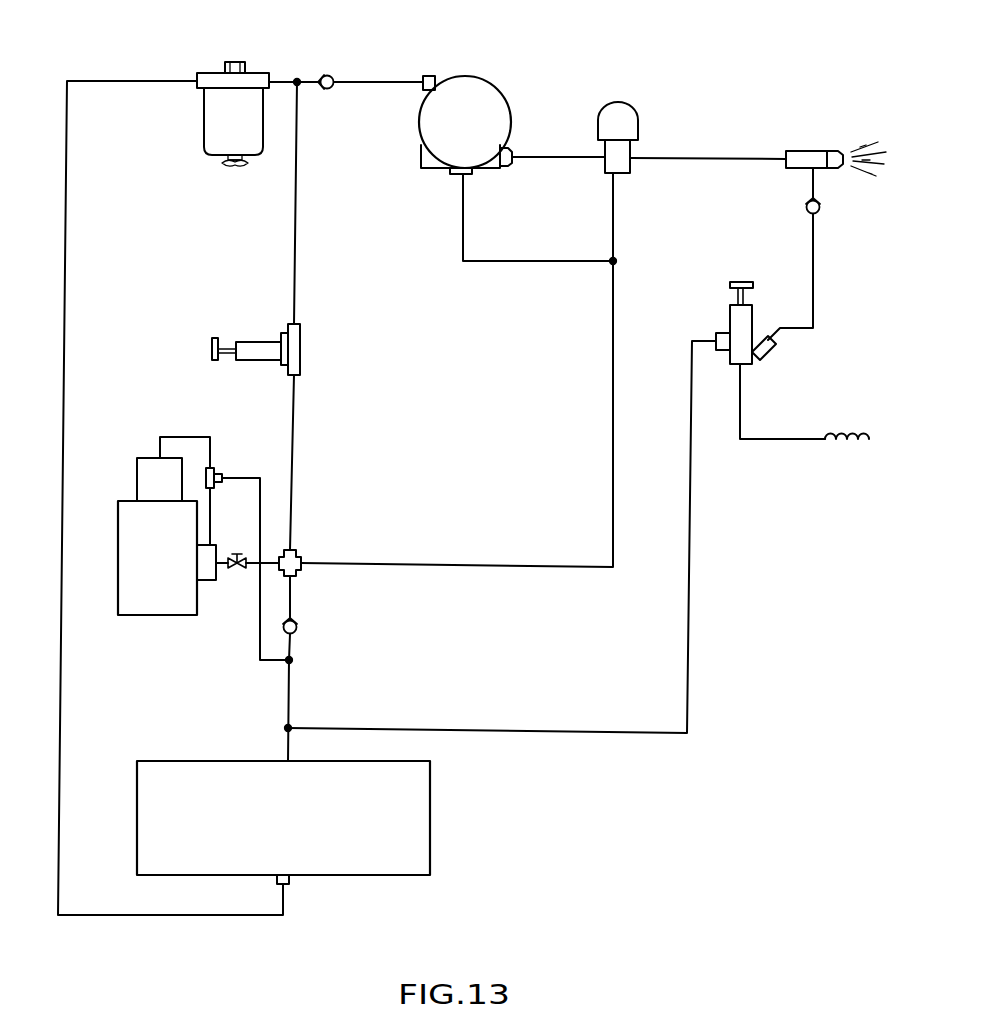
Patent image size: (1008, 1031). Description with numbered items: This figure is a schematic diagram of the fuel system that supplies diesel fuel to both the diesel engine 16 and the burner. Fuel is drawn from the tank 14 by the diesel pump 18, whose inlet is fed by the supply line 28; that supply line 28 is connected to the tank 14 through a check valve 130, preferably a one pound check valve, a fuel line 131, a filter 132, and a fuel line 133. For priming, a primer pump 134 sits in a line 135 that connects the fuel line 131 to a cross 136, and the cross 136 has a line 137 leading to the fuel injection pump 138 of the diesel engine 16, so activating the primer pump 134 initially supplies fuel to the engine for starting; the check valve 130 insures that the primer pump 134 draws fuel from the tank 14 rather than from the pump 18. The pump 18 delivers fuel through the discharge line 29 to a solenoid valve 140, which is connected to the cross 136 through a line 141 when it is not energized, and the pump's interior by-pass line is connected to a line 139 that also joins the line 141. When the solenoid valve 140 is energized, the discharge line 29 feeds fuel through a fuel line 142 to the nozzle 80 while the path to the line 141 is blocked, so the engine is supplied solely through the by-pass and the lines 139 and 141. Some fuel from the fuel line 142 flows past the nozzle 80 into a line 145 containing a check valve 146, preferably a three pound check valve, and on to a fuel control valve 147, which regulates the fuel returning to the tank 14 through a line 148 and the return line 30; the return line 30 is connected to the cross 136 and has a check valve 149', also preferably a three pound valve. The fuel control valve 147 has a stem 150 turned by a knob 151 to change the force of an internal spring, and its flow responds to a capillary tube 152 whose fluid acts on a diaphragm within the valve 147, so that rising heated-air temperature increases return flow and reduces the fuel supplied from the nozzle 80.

The tank 14 is at (432, 842).
The diesel engine 16 is at (123, 615).
The diesel pump 18 is at (420, 126).
The supply line 28 is at (369, 82).
The discharge line 29 is at (565, 160).
The return line 30 is at (288, 690).
The nozzle 80 is at (812, 150).
The check valve 130 is at (326, 76).
The fuel line 131 is at (281, 80).
The filter 132 is at (203, 122).
The fuel line 133 is at (68, 283).
The primer pump 134 is at (251, 341).
The line 135 is at (298, 267).
The cross 136 is at (300, 557).
The line 137 is at (253, 564).
The fuel injection pump 138 is at (206, 582).
The line 139 is at (565, 262).
The solenoid valve 140 is at (610, 104).
The line 141 is at (429, 565).
The fuel line 142 is at (717, 158).
The line 145 is at (817, 184).
The check valve 146 is at (806, 201).
The fuel control valve 147 is at (729, 316).
The line 148 is at (689, 608).
The check valve 149' is at (326, 618).
The stem 150 is at (733, 296).
The knob 151 is at (740, 281).
The capillary tube 152 is at (838, 437).